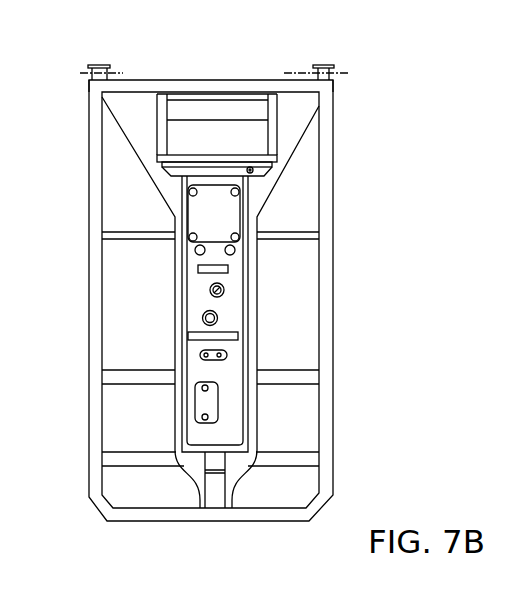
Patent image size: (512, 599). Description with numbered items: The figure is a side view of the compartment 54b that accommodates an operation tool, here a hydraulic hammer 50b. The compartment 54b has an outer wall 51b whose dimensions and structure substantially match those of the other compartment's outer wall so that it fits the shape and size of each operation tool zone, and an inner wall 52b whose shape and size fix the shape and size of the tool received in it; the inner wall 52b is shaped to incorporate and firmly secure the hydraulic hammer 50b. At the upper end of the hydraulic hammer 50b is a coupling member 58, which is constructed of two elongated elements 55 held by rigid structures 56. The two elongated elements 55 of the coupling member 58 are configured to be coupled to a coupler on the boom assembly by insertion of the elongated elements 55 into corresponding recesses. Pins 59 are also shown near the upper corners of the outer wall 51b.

The hydraulic hammer 50b is at (223, 316).
The outer wall 51b is at (328, 183).
The inner wall 52b is at (291, 142).
The compartment 54b is at (296, 404).
The elongated elements 55 is at (213, 107).
The rigid structures 56 is at (162, 110).
The coupling member 58 is at (163, 118).
The pivot pin 59 is at (92, 72).